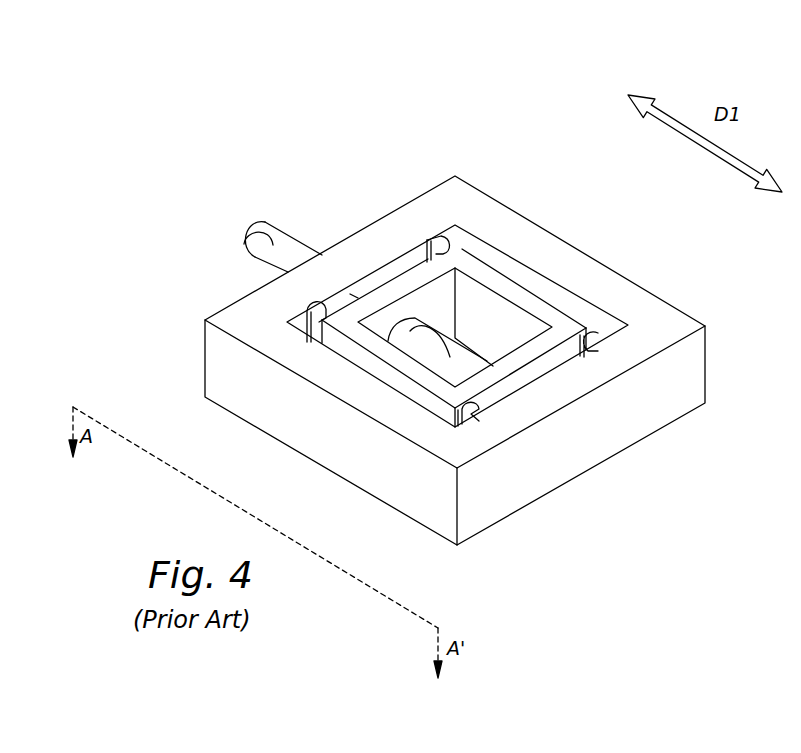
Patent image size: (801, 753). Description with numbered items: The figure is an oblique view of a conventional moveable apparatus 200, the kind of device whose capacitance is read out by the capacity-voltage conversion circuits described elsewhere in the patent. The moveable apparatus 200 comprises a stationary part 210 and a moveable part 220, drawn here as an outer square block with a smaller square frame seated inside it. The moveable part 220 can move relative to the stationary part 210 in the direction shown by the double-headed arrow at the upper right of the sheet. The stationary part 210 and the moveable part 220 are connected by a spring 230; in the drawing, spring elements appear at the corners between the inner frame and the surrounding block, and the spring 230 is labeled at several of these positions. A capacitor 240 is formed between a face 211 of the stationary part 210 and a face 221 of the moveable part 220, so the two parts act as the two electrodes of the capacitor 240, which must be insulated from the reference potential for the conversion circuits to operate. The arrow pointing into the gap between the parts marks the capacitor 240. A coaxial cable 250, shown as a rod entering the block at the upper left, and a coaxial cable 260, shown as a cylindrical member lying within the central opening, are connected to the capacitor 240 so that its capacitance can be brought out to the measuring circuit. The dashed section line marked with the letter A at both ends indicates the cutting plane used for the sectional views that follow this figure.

The moveable apparatus 200 is at (186, 109).
The stationary part 210 is at (700, 372).
The face of stationary part 211 is at (403, 260).
The moveable part 220 is at (563, 323).
The face of moveable part 221 is at (383, 275).
The spring 230 is at (437, 249).
The capacitor 240 is at (353, 288).
The coaxial cable 250 is at (250, 234).
The coaxial cable 260 is at (404, 333).